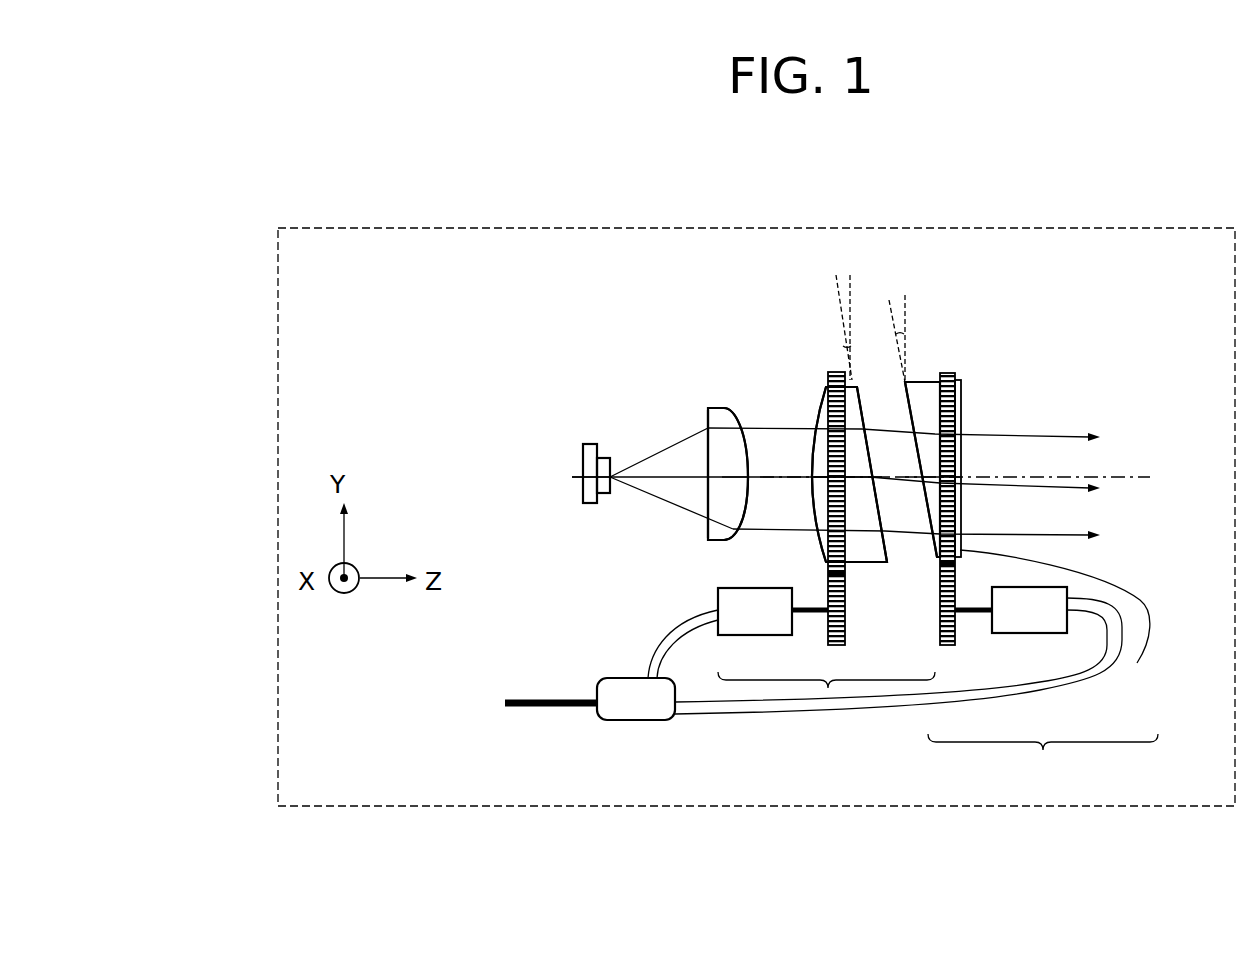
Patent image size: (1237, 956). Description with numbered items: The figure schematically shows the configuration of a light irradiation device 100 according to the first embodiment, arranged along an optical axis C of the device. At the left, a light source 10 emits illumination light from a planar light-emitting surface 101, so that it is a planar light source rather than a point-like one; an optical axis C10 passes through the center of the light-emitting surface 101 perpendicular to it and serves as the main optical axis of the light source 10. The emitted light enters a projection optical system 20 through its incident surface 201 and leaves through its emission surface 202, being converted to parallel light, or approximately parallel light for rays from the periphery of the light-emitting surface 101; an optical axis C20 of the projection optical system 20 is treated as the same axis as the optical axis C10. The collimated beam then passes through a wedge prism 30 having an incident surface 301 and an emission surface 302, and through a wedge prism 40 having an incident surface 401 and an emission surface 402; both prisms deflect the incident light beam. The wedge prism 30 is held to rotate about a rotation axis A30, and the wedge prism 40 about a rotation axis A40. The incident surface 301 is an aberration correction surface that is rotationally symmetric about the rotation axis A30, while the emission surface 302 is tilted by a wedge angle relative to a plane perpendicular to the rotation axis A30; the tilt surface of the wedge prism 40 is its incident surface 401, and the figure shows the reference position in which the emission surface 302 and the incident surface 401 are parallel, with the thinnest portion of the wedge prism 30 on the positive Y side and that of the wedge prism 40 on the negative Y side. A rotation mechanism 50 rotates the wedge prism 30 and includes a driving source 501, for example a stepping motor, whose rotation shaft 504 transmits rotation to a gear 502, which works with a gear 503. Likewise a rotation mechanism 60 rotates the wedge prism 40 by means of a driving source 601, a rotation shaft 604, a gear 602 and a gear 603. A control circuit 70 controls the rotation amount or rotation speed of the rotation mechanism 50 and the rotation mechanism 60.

The light irradiation device 100 is at (278, 356).
The light source 10 is at (586, 443).
The light-emitting surface 101 is at (610, 456).
The optical axis of the light source C10 is at (605, 494).
The projection optical system 20 is at (716, 407).
The incident surface of the projection optical system 201 is at (707, 497).
The emission surface of the projection optical system 202 is at (745, 500).
The optical axis of the projection optical system C20 is at (727, 470).
The wedge prism 30 is at (838, 372).
The incident surface 301 is at (808, 510).
The emission surface 302 is at (863, 382).
The rotation axis A30 is at (815, 445).
The wedge prism 40 is at (923, 380).
The incident surface 401 is at (905, 448).
The emission surface 402 is at (962, 407).
The rotation axis A40 is at (918, 510).
The rotation mechanism 50 is at (828, 690).
The driving source 501 is at (757, 607).
The gear 502 is at (846, 542).
The gear 503 is at (880, 563).
The rotation shaft 504 is at (808, 614).
The rotation mechanism 60 is at (1043, 762).
The driving source 601 is at (1038, 627).
The gear 602 is at (950, 645).
The gear 603 is at (1137, 663).
The rotation shaft 604 is at (973, 613).
The control circuit 70 is at (590, 684).
The optical axis C is at (1150, 479).